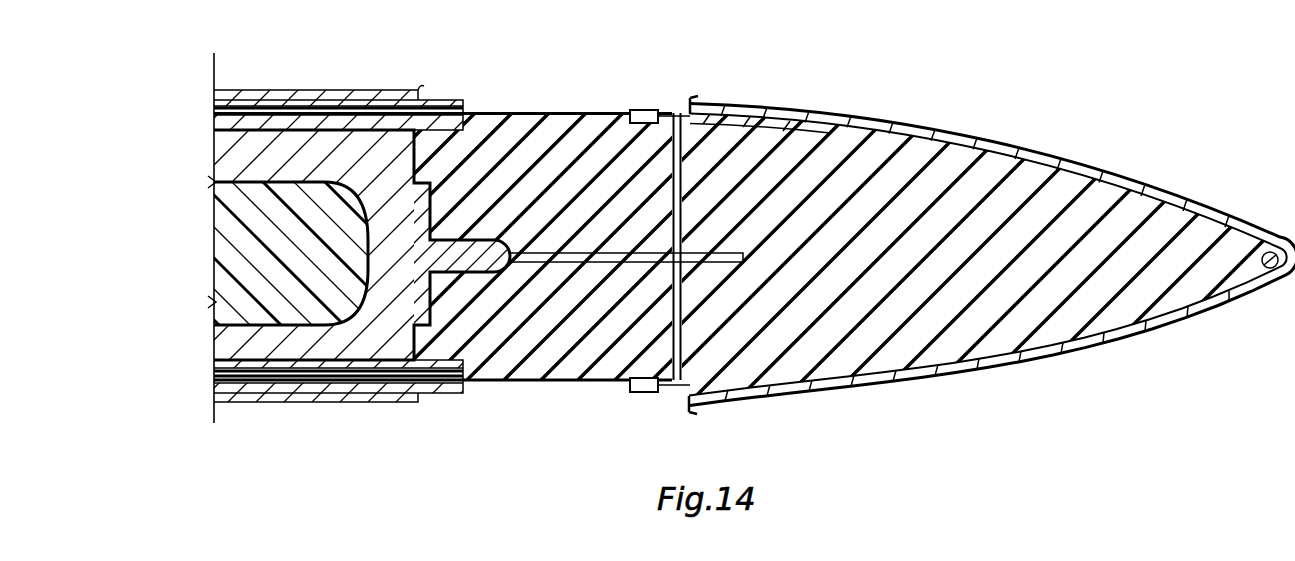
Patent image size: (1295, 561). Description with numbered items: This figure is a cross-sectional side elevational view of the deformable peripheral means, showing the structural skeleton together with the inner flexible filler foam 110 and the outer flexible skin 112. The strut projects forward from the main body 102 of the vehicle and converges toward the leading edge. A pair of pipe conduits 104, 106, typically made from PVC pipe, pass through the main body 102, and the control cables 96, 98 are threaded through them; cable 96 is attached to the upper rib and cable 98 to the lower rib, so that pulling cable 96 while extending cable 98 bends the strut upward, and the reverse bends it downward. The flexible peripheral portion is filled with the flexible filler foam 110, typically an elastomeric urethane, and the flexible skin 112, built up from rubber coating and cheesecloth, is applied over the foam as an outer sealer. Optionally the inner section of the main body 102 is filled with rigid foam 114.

The cable 96 is at (505, 113).
The cable 98 is at (600, 382).
The main body 102 is at (238, 343).
The pipe conduit 104 is at (433, 100).
The pipe conduit 106 is at (437, 398).
The flexible filler foam 110 is at (1105, 200).
The flexible skin 112 is at (1012, 152).
The rigid foam 114 is at (233, 213).